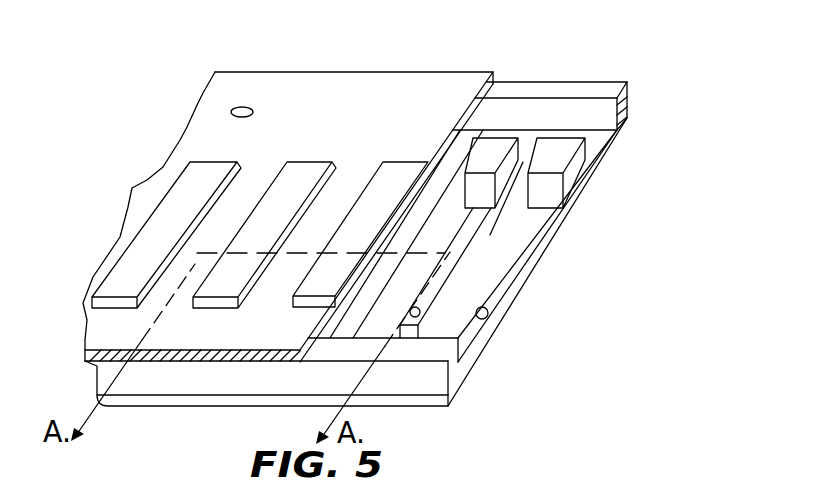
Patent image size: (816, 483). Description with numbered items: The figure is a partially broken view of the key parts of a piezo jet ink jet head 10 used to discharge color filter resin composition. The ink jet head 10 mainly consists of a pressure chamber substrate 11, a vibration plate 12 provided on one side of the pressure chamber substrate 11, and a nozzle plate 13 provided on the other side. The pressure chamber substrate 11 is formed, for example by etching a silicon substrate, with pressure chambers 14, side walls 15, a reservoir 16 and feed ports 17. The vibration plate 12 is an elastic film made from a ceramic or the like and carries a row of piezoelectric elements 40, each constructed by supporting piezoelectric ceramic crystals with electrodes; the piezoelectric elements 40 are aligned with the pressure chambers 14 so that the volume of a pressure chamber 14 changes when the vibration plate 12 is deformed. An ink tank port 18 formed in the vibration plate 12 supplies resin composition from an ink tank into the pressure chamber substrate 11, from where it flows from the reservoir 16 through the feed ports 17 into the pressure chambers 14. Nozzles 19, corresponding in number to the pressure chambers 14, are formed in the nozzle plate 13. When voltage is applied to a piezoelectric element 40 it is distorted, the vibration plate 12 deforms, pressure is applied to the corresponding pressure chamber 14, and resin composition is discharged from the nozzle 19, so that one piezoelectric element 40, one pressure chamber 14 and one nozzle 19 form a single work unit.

The ink jet head 10 is at (630, 63).
The pressure chamber substrate 11 is at (443, 382).
The vibration plate 12 is at (193, 363).
The nozzle plate 13 is at (480, 352).
The pressure chamber 14 is at (398, 326).
The side wall 15 is at (488, 232).
The reservoir 16 is at (568, 135).
The feed port 17 is at (512, 160).
The ink tank port 18 is at (237, 112).
The nozzle 19 is at (488, 316).
The piezoelectric element 40 is at (312, 162).